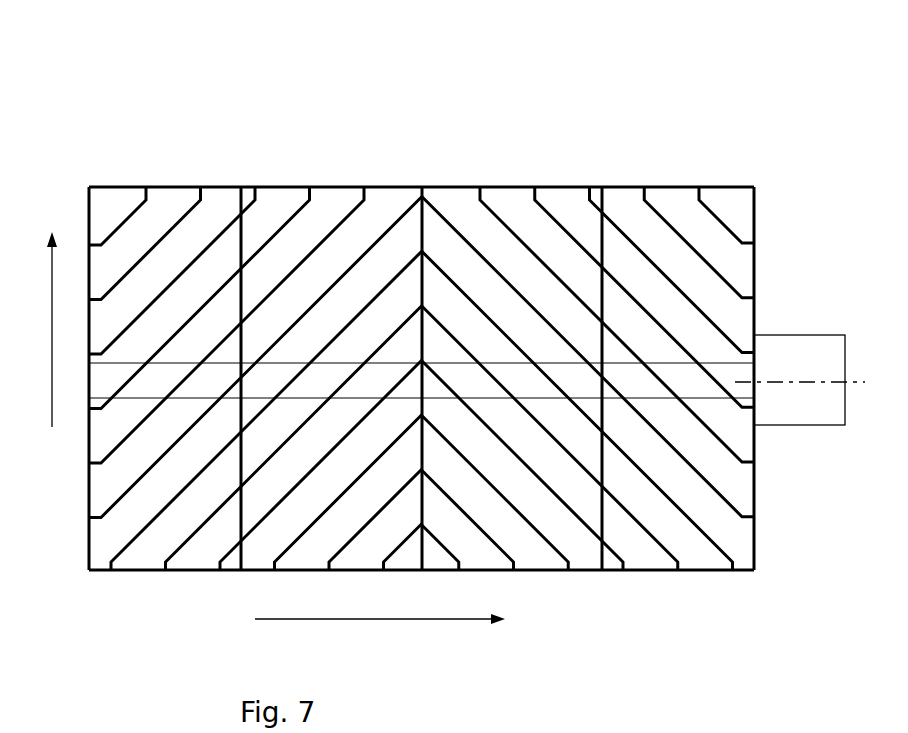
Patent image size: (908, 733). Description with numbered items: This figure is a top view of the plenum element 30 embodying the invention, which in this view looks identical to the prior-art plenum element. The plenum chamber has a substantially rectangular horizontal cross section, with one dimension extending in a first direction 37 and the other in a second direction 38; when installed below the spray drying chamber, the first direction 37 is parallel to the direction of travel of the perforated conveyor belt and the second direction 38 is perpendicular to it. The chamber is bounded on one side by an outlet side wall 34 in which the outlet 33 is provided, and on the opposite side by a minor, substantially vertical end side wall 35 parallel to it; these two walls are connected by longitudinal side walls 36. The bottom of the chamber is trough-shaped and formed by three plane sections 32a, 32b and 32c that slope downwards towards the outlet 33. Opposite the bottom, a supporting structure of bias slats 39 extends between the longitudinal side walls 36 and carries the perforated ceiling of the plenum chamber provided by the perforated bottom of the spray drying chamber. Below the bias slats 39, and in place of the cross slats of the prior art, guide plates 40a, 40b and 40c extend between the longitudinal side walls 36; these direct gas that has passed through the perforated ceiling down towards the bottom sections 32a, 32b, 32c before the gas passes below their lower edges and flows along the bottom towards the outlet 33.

The plenum element 30 is at (419, 327).
The plane section 32a is at (178, 518).
The plane section 32b is at (150, 382).
The plane section 32c is at (683, 254).
The outlet 33 is at (822, 367).
The outlet side wall 34 is at (754, 287).
The end side wall 35 is at (89, 226).
The longitudinal side walls 36 is at (465, 188).
The first direction 37 is at (52, 362).
The second direction 38 is at (313, 620).
The bias slats 39 is at (388, 226).
The guide plate 40a is at (241, 250).
The guide plate 40b is at (418, 229).
The guide plate 40c is at (603, 248).